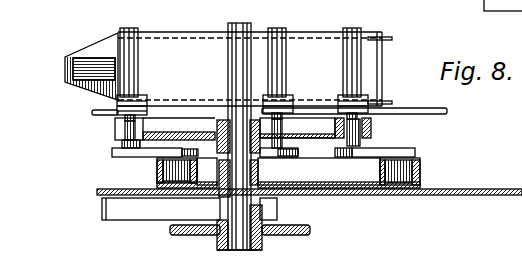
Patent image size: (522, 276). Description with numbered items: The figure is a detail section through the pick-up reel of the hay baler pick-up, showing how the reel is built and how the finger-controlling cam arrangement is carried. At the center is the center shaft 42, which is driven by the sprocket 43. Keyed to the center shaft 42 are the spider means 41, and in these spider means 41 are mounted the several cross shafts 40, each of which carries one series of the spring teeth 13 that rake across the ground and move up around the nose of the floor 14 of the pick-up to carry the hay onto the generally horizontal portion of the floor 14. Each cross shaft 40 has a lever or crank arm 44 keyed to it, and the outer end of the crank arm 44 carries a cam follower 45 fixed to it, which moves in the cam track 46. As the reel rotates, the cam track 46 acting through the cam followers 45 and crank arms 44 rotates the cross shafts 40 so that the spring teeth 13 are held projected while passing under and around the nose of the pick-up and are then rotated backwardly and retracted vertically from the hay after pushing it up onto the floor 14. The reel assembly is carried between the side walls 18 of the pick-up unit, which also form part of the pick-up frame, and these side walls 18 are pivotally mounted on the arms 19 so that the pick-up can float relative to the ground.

The spring teeth 13 is at (421, 115).
The floor 14 is at (167, 42).
The side walls 18 is at (354, 190).
The arms 19 is at (102, 208).
The cross shafts 40 is at (133, 17).
The spider means 41 is at (372, 134).
The center shaft 42 is at (238, 23).
The sprocket 43 is at (175, 233).
The crank arm 44 is at (112, 152).
The cam follower 45 is at (165, 170).
The cam track 46 is at (157, 183).